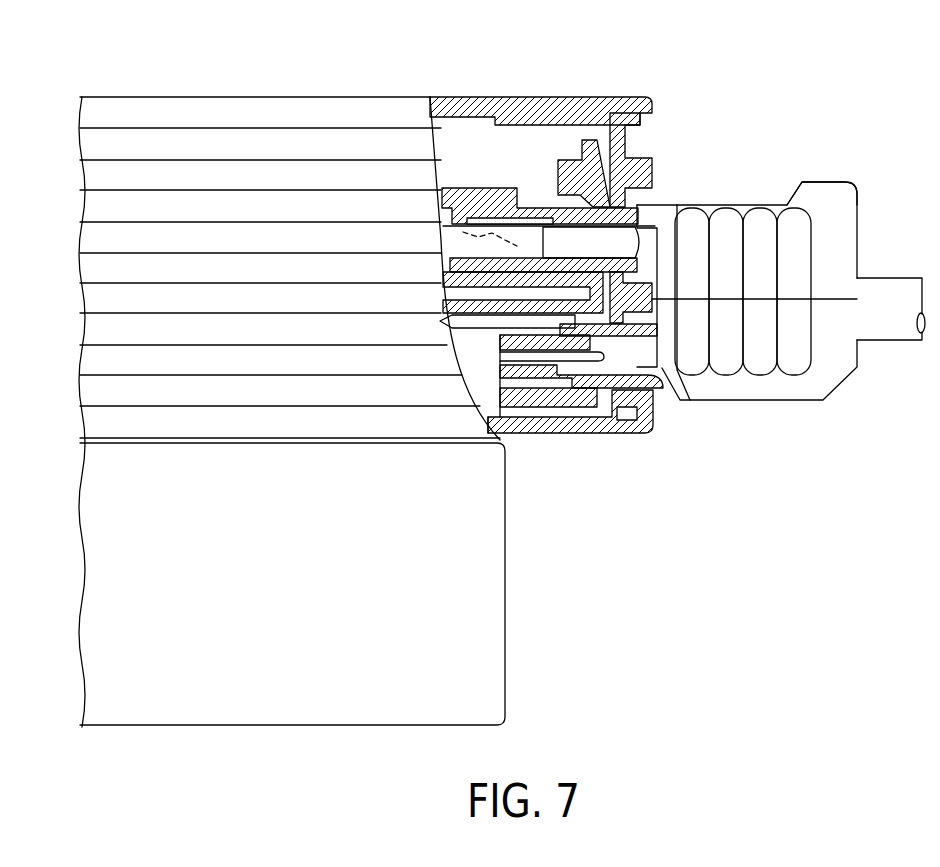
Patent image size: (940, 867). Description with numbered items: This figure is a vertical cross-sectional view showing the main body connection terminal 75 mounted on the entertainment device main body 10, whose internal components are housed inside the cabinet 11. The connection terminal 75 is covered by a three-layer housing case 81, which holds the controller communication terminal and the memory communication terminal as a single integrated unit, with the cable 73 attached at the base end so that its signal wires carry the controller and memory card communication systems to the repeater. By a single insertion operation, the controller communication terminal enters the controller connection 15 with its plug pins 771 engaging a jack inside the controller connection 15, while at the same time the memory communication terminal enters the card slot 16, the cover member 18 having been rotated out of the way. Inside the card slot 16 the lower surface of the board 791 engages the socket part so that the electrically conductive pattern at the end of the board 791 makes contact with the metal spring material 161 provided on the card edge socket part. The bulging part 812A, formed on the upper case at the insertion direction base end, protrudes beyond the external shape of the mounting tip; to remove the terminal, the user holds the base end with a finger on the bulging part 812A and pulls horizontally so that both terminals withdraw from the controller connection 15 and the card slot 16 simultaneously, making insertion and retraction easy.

The device main body 10 is at (292, 364).
The cabinet 11 is at (357, 110).
The controller connection 15 is at (587, 287).
The card slot 16 is at (666, 195).
The cover member 18 is at (595, 172).
The cable 73 is at (902, 293).
The main body connection terminal 75 is at (784, 301).
The housing case 81 is at (762, 212).
The metal spring material 161 is at (513, 246).
The plug pins 771 is at (603, 362).
The board 791 is at (547, 210).
The bulging part 812A is at (820, 182).